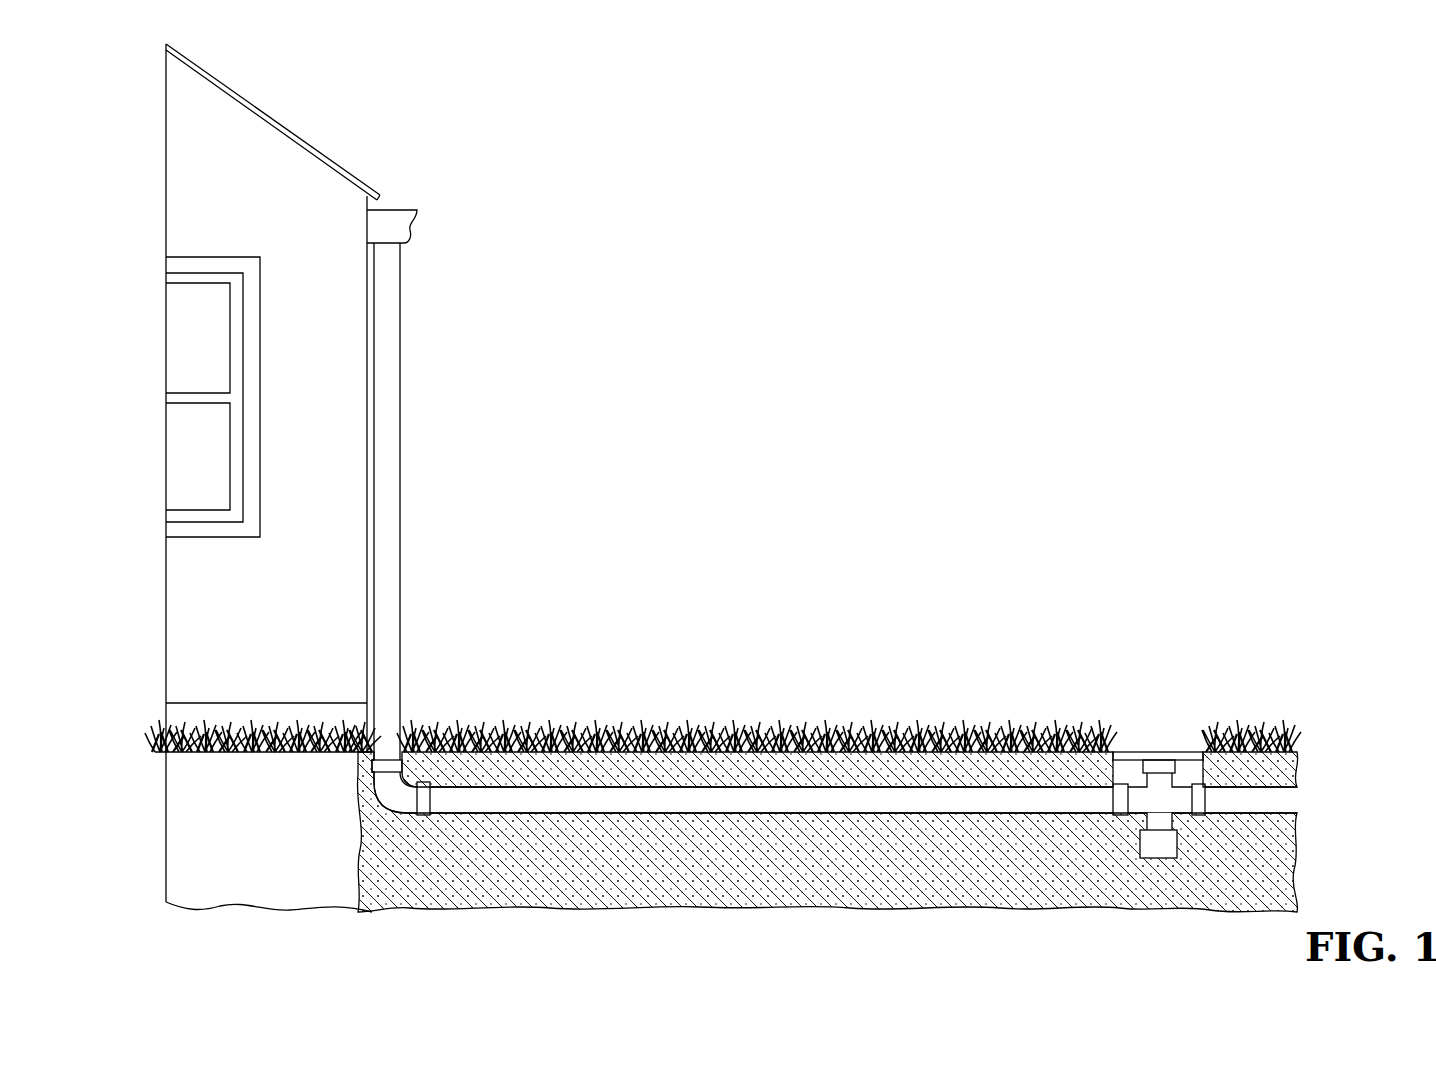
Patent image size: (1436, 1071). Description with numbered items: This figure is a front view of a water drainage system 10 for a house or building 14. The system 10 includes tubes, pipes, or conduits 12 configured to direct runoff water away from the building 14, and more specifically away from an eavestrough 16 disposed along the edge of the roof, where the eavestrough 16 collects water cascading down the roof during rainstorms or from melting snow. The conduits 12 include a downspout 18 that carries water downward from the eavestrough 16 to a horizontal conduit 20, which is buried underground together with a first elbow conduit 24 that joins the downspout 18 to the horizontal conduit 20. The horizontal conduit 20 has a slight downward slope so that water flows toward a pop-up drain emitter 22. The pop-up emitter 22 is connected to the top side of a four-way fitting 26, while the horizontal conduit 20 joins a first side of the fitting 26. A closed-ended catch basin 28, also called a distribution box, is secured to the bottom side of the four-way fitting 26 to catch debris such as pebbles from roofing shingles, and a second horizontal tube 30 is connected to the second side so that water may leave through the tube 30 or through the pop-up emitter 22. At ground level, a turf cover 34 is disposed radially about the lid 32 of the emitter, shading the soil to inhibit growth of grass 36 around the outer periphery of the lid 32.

The water drainage system 10 is at (896, 532).
The conduits 12 is at (436, 501).
The building 14 is at (262, 128).
The eavestrough 16 is at (413, 229).
The downspout 18 is at (400, 470).
The horizontal conduit 20 is at (750, 800).
The pop-up drain emitter 22 is at (1163, 716).
The first elbow conduit 24 is at (428, 766).
The four-way fitting 26 is at (1168, 805).
The catch basin 28 is at (1138, 845).
The second horizontal tube 30 is at (1272, 800).
The lid 32 is at (1160, 752).
The turf cover 34 is at (1130, 752).
The grass 36 is at (690, 748).